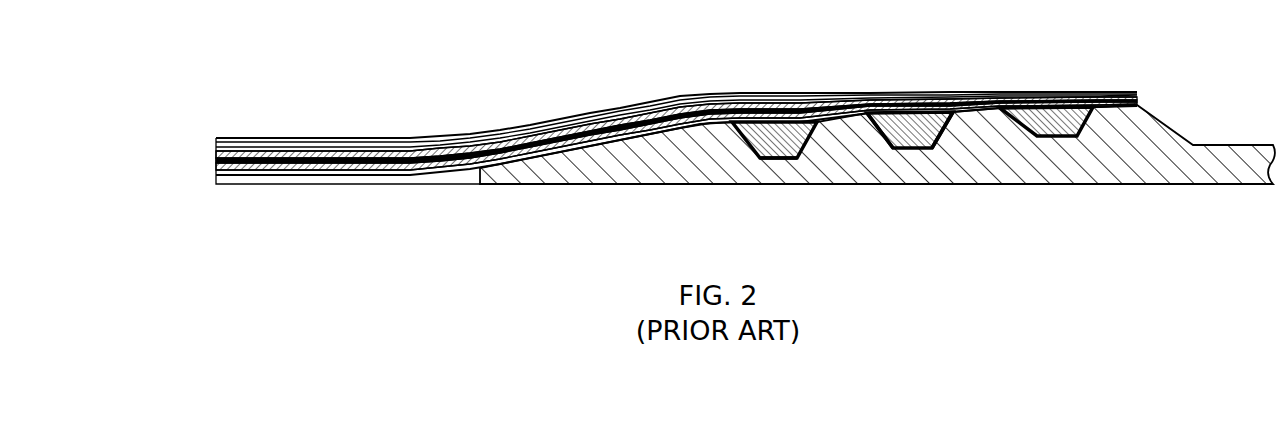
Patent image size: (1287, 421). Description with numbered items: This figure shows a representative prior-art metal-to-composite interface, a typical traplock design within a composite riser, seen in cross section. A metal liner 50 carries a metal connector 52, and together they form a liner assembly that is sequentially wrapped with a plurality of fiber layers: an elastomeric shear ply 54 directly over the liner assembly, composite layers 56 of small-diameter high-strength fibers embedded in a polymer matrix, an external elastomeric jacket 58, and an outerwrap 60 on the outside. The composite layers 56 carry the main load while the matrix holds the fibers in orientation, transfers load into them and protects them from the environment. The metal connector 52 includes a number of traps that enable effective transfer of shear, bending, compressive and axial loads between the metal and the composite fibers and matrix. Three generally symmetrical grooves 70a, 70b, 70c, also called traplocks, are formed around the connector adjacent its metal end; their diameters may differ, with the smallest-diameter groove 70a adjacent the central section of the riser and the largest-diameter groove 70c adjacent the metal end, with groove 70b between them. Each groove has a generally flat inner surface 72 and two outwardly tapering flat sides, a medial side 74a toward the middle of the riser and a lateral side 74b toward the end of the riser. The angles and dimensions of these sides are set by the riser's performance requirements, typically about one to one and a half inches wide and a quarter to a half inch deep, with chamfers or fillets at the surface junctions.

The metal liner 50 is at (325, 184).
The metal connector 52 is at (1214, 145).
The elastomeric shear ply 54 is at (209, 181).
The composite layers 56 is at (320, 164).
The external elastomeric jacket 58 is at (299, 150).
The outerwrap 60 is at (1118, 90).
The groove 70a is at (752, 94).
The groove 70b is at (900, 100).
The groove 70c is at (1040, 97).
The inner surface 72 is at (775, 158).
The medial side 74a is at (888, 142).
The lateral side 74b is at (942, 140).